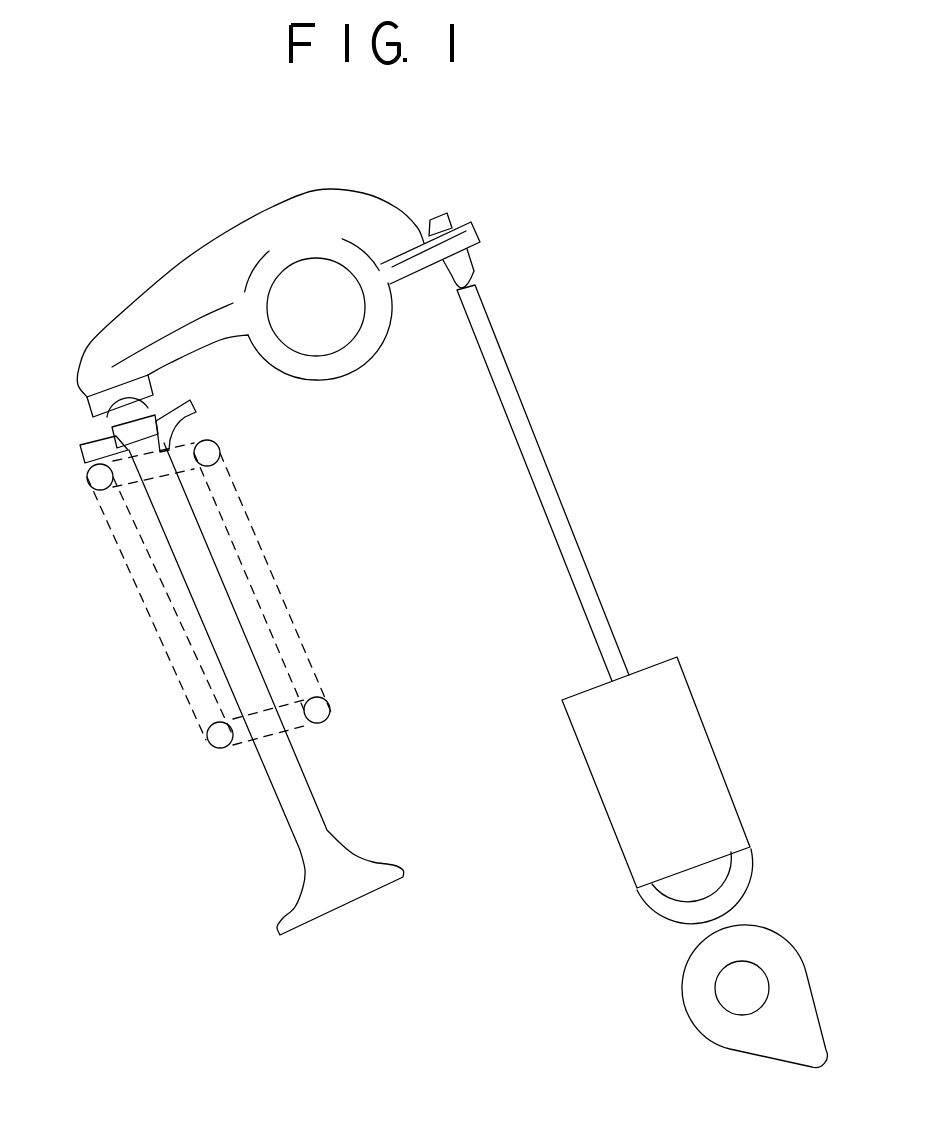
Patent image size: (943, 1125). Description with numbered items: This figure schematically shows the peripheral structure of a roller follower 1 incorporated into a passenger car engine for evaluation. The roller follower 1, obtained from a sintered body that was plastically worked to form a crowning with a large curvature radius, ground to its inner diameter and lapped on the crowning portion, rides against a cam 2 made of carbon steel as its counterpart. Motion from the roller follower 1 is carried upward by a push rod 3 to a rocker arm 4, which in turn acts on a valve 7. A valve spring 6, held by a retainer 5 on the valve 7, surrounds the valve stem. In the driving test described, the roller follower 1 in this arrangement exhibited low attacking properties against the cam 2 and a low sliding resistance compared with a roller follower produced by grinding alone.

The roller follower 1 is at (710, 820).
The cam 2 is at (787, 975).
The push rod 3 is at (547, 497).
The rocker arm 4 is at (329, 210).
The retainer 5 is at (192, 412).
The valve spring 6 is at (332, 712).
The valve 7 is at (358, 883).